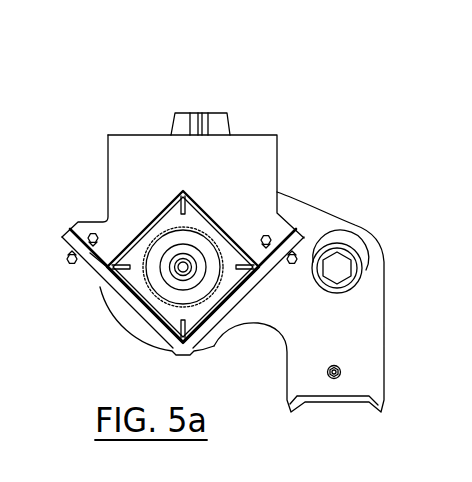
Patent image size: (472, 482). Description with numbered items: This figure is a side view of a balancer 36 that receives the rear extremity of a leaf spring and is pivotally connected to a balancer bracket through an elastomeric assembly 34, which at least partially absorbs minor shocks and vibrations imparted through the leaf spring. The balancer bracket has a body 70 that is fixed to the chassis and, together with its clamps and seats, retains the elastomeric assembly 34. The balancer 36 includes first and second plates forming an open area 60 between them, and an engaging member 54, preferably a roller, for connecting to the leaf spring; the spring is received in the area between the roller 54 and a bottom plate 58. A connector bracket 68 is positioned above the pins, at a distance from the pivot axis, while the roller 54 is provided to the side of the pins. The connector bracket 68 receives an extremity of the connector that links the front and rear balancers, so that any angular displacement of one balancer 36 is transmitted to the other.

The elastomeric assembly 34 is at (215, 232).
The balancer 36 is at (116, 332).
The engaging member 54 is at (337, 268).
The bottom plate 58 is at (334, 398).
The open area 60 is at (396, 337).
The connector bracket 68 is at (205, 113).
The body 70 is at (134, 188).